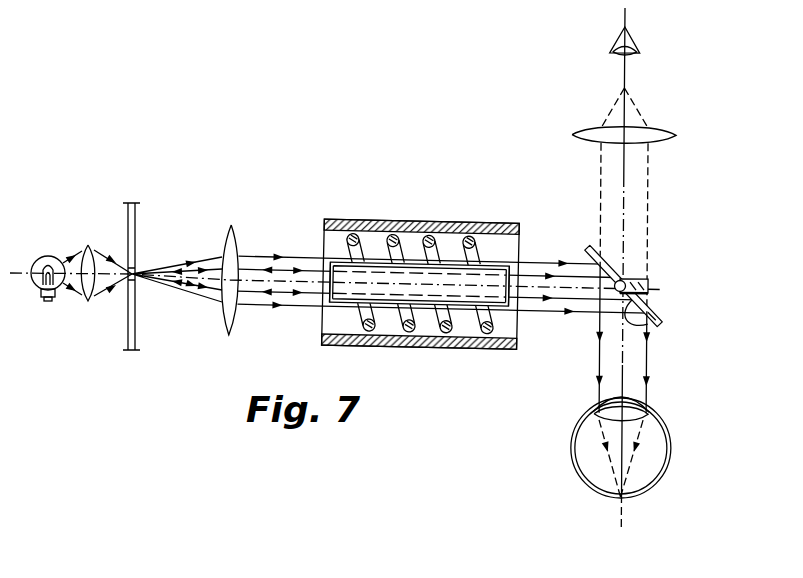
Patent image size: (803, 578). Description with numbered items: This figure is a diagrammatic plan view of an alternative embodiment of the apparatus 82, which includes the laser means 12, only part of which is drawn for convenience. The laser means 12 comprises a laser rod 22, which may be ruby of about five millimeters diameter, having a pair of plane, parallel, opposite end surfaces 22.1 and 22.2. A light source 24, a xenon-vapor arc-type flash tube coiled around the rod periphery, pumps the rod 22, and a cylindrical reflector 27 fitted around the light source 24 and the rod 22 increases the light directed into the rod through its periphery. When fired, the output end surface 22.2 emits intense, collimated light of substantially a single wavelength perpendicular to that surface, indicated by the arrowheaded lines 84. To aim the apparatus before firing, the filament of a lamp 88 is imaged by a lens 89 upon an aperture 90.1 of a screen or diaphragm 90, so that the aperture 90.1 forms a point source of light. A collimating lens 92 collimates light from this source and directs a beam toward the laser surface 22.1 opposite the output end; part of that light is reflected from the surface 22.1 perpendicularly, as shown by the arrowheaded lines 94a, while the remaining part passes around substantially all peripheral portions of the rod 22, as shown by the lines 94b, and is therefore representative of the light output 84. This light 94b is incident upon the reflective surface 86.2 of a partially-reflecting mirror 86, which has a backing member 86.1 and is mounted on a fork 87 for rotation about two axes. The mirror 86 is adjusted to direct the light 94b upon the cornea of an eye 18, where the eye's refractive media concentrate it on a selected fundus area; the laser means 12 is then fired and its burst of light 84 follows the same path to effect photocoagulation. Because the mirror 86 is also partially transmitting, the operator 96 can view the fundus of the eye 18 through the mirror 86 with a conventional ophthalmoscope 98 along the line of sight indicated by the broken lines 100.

The lamp 88 is at (52, 257).
The lens 89 is at (85, 301).
The diaphragm 90 is at (128, 213).
The aperture 90.1 is at (134, 273).
The collimating lens 92 is at (230, 226).
The reflected light 94a is at (157, 288).
The light directed past laser rod 94b is at (217, 304).
The laser end surface 22.1 is at (326, 272).
The laser rod 22 is at (418, 247).
The light source 24 is at (351, 233).
The cylindrical reflector 27 is at (414, 218).
The laser means 12 is at (421, 260).
The output end surface 22.2 is at (512, 264).
The laser light output 84 is at (537, 269).
The partially-reflecting mirror 86 is at (650, 287).
The fork 87 is at (648, 282).
The backing member 86.1 is at (658, 311).
The reflective surface 86.2 is at (647, 329).
The operator 96 is at (637, 34).
The ophthalmoscope 98 is at (592, 133).
The line of sight 100 is at (634, 107).
The apparatus 82 is at (637, 162).
The eye 18 is at (573, 448).